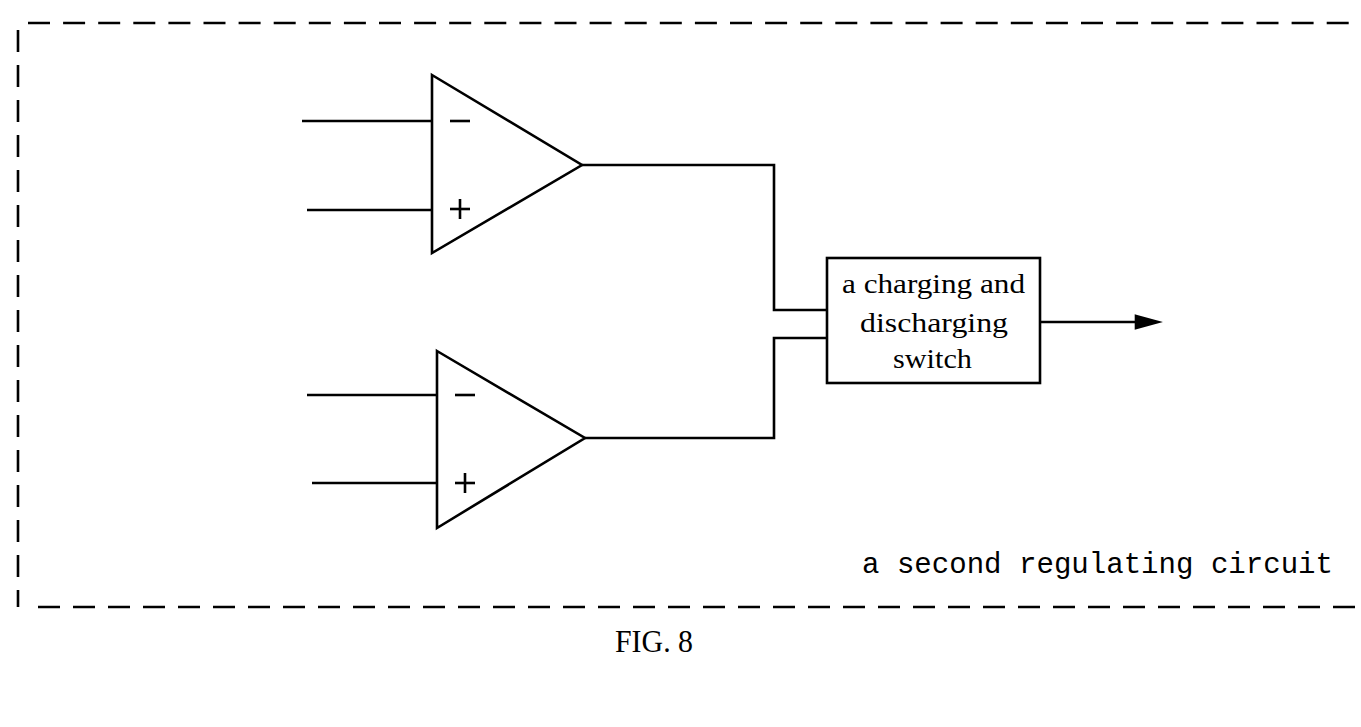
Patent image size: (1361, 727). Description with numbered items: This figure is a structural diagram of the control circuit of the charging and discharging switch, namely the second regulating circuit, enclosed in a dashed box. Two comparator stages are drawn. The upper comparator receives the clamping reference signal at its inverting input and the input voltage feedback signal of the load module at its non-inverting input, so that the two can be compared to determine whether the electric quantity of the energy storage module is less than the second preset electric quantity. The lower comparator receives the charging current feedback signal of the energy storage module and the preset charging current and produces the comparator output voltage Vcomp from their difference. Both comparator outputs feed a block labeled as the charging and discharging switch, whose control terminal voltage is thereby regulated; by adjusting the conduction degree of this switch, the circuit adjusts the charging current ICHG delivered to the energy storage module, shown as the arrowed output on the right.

The comparator output voltage Vcomp is at (706, 388).
The charging current of the energy storage module ICHG is at (1151, 320).